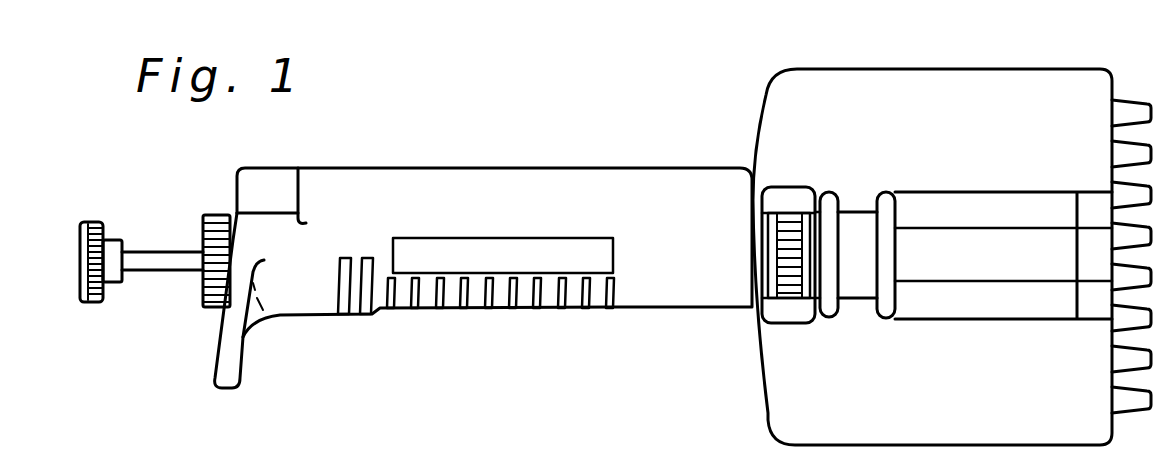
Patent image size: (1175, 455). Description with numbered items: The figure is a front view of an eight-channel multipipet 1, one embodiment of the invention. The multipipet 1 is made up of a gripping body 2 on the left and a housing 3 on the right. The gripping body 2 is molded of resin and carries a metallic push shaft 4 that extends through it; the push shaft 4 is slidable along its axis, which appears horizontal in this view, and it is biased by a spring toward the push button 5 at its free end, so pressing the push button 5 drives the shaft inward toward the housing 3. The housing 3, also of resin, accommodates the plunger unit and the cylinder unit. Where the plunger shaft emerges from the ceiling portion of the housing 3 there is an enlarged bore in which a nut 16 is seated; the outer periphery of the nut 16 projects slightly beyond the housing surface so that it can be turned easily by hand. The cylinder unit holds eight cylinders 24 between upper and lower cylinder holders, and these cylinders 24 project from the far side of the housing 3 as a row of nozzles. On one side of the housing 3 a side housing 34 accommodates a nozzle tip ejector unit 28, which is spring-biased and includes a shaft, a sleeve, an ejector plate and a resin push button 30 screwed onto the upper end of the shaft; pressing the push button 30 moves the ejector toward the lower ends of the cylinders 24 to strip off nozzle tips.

The multipipet 1 is at (552, 128).
The gripping body 2 is at (460, 164).
The housing 3 is at (923, 68).
The push shaft 4 is at (163, 260).
The push button 5 is at (92, 221).
The nut 16 is at (789, 297).
The cylinders 24 is at (1135, 112).
The nozzle tip ejector unit 28 is at (847, 300).
The push button 30 is at (868, 293).
The side housing 34 is at (968, 310).